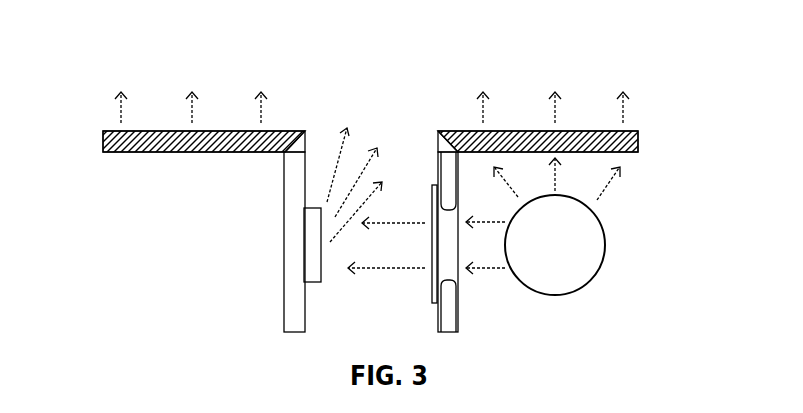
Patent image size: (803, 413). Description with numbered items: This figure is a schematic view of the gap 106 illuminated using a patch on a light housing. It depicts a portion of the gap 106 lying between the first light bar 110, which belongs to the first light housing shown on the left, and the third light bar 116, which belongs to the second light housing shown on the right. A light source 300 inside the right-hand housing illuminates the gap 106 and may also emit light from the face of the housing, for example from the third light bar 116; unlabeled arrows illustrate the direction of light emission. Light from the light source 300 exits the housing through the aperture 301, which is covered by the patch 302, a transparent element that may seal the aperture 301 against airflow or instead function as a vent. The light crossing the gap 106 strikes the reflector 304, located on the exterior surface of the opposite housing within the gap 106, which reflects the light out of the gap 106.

The first light bar 110 is at (120, 148).
The third light bar 116 is at (623, 144).
The gap 106 is at (375, 106).
The reflector 304 is at (313, 268).
The patch 302 is at (434, 284).
The aperture 301 is at (448, 292).
The light source 300 is at (543, 226).